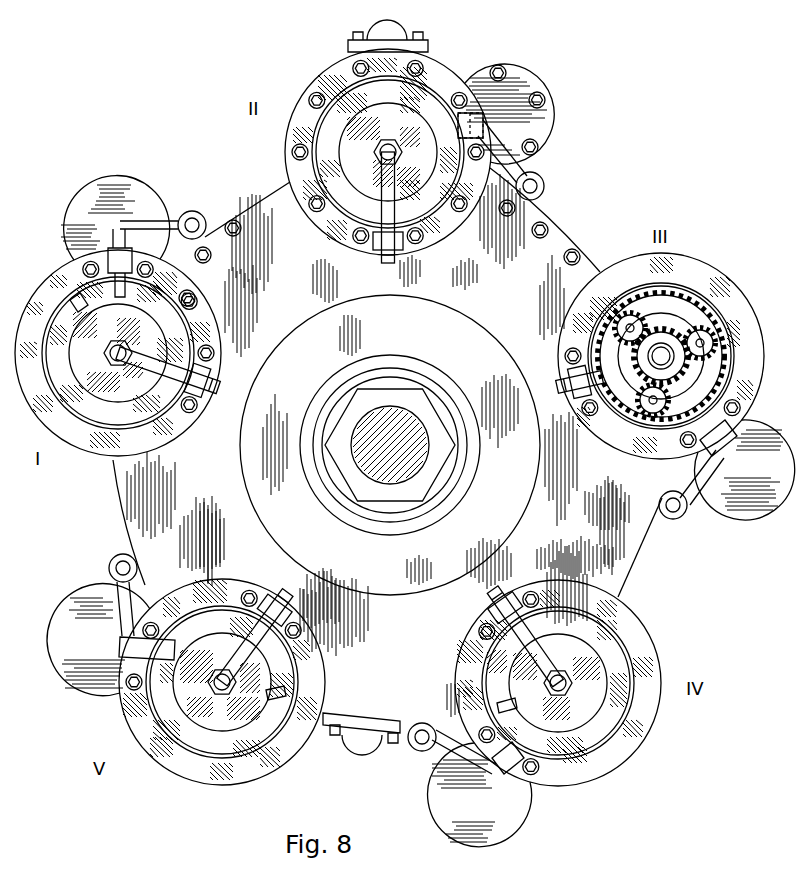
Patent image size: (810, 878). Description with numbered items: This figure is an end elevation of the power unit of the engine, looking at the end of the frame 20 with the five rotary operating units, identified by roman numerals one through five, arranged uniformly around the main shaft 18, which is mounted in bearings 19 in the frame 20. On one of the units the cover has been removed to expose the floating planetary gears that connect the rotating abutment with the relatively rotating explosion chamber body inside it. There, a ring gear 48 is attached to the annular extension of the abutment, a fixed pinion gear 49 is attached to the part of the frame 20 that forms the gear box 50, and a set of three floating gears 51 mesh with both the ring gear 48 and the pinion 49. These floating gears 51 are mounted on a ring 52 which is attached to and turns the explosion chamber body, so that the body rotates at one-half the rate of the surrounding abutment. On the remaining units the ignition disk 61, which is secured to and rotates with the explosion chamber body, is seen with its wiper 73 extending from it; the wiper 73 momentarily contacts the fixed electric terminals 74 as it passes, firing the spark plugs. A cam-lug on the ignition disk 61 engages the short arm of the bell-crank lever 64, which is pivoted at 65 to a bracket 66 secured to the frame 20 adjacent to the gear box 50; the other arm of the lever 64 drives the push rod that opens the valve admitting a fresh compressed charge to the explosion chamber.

The main shaft 18 is at (418, 452).
The bearings 19 is at (420, 485).
The frames 20 is at (387, 387).
The ring gear 48 is at (632, 297).
The fixed pinion gear 49 is at (683, 362).
The gear box 50 is at (708, 263).
The floating gears 51 is at (703, 340).
The ring 52 is at (690, 382).
The ignition disk 61 is at (326, 417).
The lever 64 is at (160, 371).
The pivot 65 is at (530, 590).
The bracket 66 is at (217, 378).
The wiper 73 is at (76, 302).
The fixed electric terminals 74 is at (118, 297).